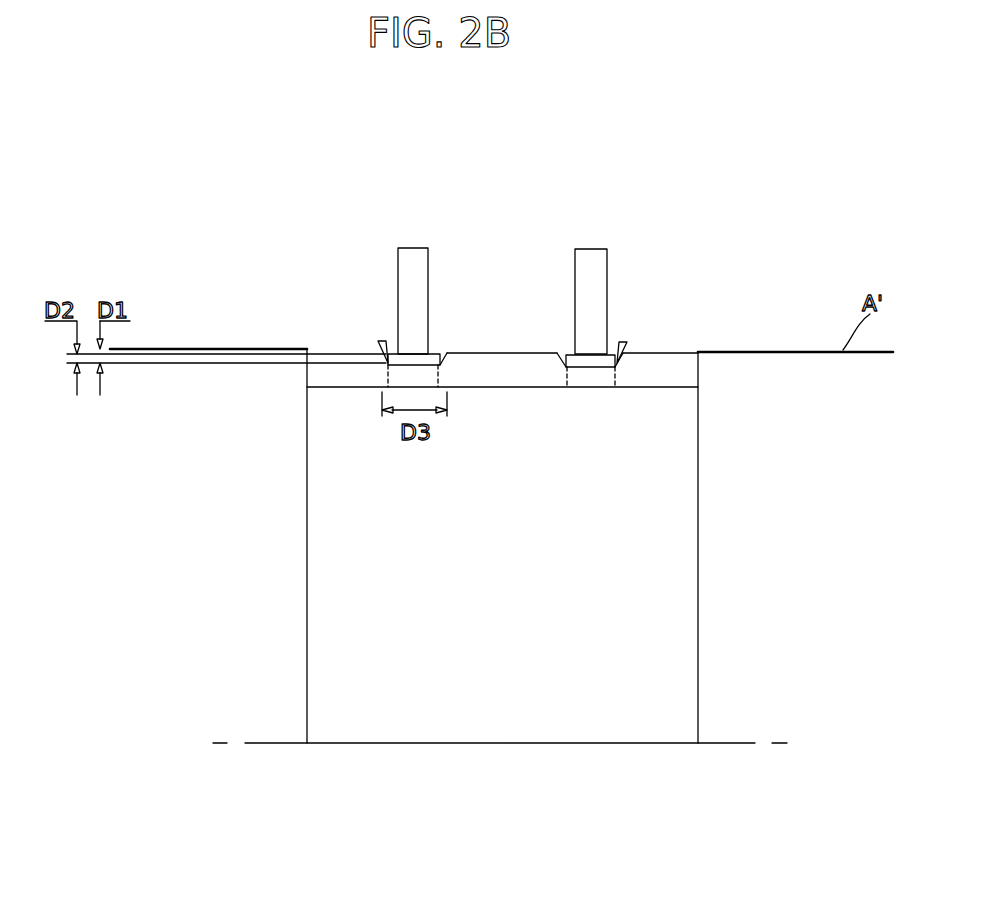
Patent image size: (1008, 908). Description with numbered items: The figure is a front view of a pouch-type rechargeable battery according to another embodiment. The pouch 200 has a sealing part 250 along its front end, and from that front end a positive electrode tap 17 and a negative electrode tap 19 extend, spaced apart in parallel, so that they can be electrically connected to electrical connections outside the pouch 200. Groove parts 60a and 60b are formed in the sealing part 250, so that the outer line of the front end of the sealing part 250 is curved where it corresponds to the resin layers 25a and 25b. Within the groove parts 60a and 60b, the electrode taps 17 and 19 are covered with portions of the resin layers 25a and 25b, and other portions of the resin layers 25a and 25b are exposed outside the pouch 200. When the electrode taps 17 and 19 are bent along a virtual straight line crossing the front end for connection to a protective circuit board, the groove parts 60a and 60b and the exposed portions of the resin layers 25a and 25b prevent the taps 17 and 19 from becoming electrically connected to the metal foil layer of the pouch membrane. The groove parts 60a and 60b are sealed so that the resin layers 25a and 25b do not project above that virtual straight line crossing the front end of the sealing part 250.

The positive electrode tap 17 is at (413, 258).
The negative electrode tap 19 is at (592, 262).
The resin layer 25a is at (424, 352).
The resin layer 25b is at (583, 357).
The groove part 60a is at (382, 343).
The groove part 60b is at (623, 345).
The pouch 200 is at (712, 542).
The sealing part 250 is at (693, 372).